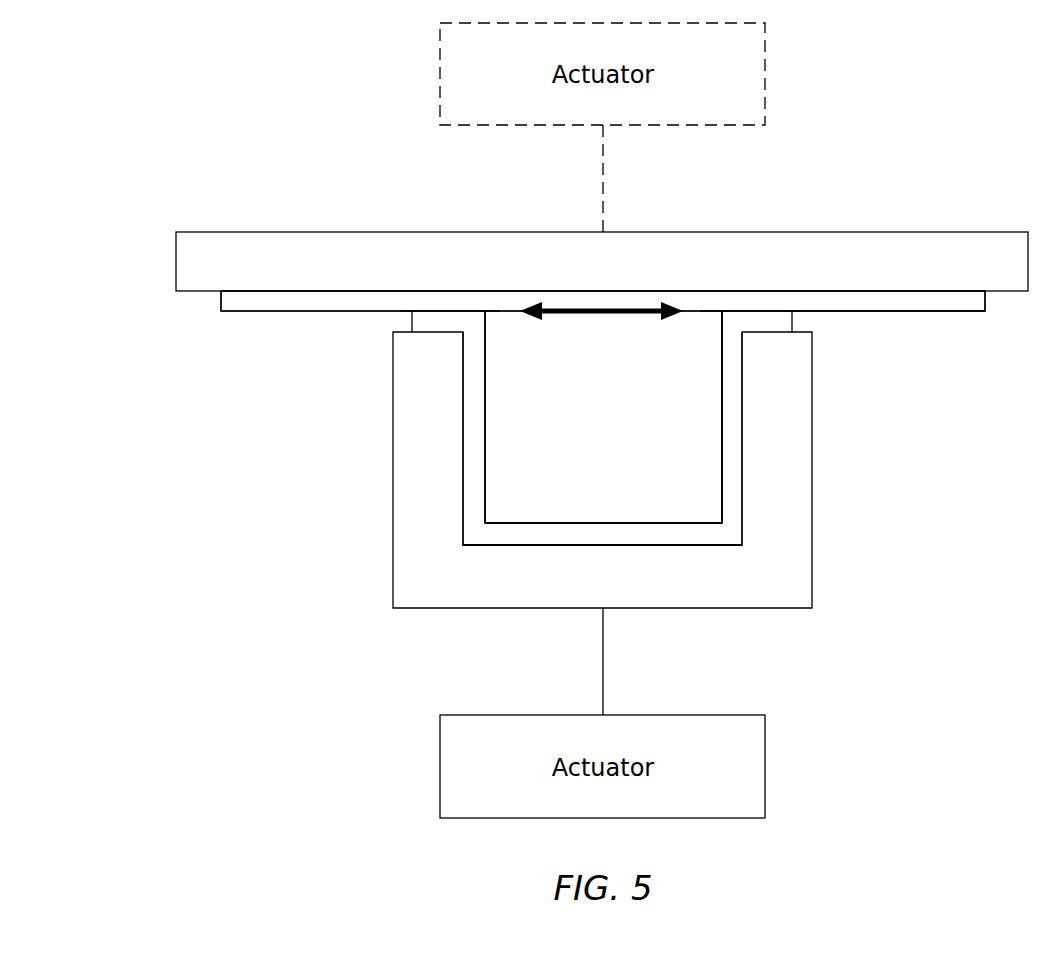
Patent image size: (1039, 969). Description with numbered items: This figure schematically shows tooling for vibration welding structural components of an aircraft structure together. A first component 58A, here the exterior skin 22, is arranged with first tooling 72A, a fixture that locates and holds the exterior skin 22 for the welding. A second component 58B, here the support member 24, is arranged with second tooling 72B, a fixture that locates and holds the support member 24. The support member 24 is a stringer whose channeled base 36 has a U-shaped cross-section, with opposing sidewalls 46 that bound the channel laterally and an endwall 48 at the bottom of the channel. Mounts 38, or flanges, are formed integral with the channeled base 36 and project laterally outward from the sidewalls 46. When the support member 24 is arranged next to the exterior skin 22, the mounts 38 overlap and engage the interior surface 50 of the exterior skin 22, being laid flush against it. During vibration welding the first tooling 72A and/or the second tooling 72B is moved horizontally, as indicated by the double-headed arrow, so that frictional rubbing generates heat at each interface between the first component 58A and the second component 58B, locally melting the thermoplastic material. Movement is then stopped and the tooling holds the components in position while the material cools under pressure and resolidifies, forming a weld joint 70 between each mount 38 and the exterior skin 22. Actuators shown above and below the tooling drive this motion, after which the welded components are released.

The first tooling 72A is at (167, 254).
The exterior skin 22 is at (268, 317).
The first component 58A is at (603, 301).
The interior surface 50 is at (918, 311).
The mount 38 is at (446, 311).
The weld joint 70 is at (405, 317).
The second tooling 72B is at (393, 575).
The support member 24 is at (744, 462).
The second component 58B is at (603, 417).
The sidewall 46 is at (485, 426).
The endwall 48 is at (612, 523).
The channeled base 36 is at (516, 549).